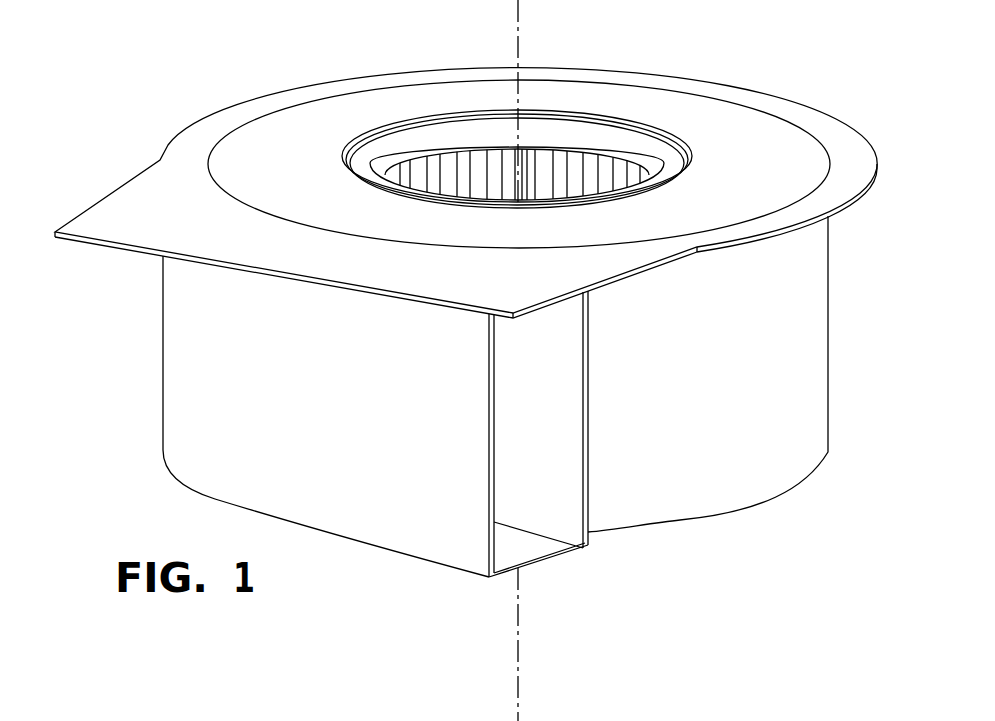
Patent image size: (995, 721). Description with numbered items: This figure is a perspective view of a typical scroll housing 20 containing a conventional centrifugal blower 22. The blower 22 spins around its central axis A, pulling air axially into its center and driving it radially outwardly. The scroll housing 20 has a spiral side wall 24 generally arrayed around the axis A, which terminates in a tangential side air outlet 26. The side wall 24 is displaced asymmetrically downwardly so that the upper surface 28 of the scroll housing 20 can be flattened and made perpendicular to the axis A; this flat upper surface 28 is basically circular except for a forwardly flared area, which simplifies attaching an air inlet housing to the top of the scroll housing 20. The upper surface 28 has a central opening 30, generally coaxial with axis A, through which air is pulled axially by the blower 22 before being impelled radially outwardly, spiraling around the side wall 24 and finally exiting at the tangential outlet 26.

The scroll housing 20 is at (836, 275).
The centrifugal blower 22 is at (453, 183).
The spiral side wall 24 is at (802, 443).
The tangential side air outlet 26 is at (586, 514).
The upper surface 28 is at (287, 128).
The central opening 30 is at (633, 128).
The central axis A is at (518, 58).